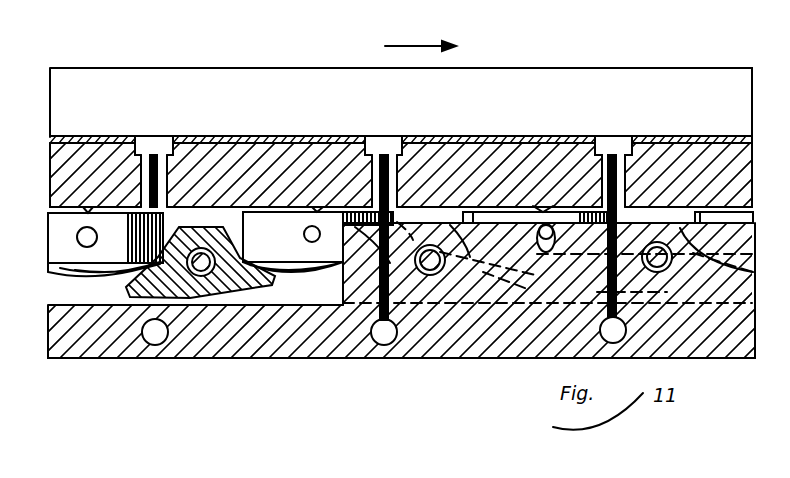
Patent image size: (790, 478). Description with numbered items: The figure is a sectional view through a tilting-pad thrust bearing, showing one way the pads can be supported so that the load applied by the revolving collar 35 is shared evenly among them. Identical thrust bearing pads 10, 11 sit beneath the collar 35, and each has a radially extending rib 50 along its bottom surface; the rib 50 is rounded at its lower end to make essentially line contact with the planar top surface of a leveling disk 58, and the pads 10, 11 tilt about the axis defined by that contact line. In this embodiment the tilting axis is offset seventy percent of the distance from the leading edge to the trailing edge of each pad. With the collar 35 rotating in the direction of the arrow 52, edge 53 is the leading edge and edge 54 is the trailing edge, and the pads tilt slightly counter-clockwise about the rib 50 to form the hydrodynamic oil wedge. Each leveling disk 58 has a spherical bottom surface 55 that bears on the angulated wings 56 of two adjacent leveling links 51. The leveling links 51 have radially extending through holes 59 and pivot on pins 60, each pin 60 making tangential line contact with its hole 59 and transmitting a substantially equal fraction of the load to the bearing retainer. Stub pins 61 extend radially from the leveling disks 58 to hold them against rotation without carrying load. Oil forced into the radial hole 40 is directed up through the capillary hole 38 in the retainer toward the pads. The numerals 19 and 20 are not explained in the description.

The thrust bearing pad 10 is at (257, 147).
The thrust bearing pad 11 is at (518, 153).
The T-slot head 19 is at (140, 137).
The T-slot stem 20 is at (167, 137).
The collar 35 is at (610, 80).
The capillary hole 38 is at (393, 285).
The radial hole 40 is at (390, 337).
The rib 50 is at (317, 207).
The leveling link 51 is at (193, 230).
The arrow 52 is at (414, 46).
The leading edge 53 is at (398, 137).
The trailing edge 54 is at (370, 137).
The spherical bottom surface 55 is at (333, 280).
The angulated wing 56 is at (241, 282).
The leveling disk 58 is at (290, 280).
The through hole 59 is at (193, 298).
The pin 60 is at (222, 232).
The stub pin 61 is at (304, 230).